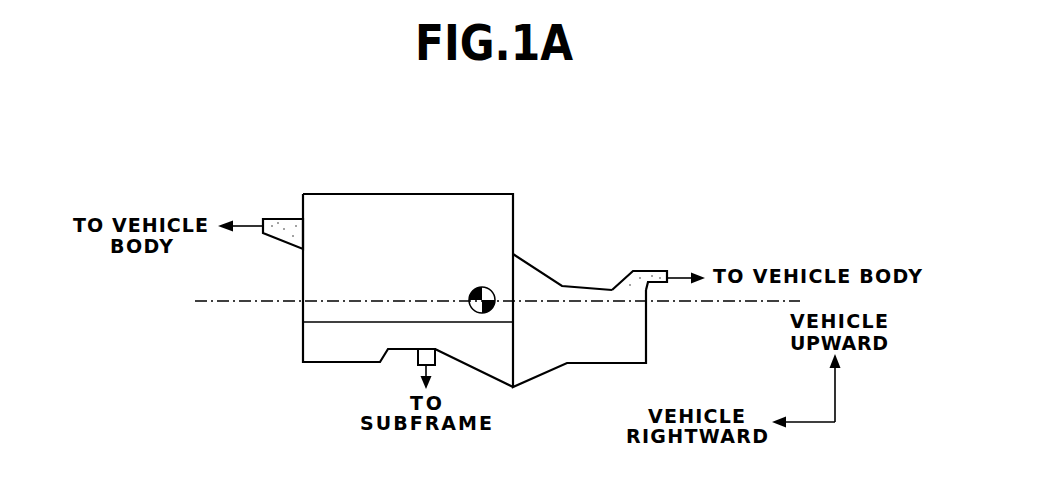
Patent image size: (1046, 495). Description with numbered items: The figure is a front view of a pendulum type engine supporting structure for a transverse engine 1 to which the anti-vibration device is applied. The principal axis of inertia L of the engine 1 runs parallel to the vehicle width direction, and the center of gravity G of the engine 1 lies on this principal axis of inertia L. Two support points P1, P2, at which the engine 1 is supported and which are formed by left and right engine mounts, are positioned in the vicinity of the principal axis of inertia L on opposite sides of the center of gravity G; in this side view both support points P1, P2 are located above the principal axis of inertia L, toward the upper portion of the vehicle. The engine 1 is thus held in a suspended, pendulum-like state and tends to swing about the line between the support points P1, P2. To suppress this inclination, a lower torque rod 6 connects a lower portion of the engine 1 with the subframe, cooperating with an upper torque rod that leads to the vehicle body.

The engine 1 is at (395, 228).
The support point P1 is at (287, 227).
The support point P2 is at (643, 278).
The center of gravity G is at (476, 289).
The lower torque rod 6 is at (417, 357).
The principal axis of inertia L is at (707, 303).